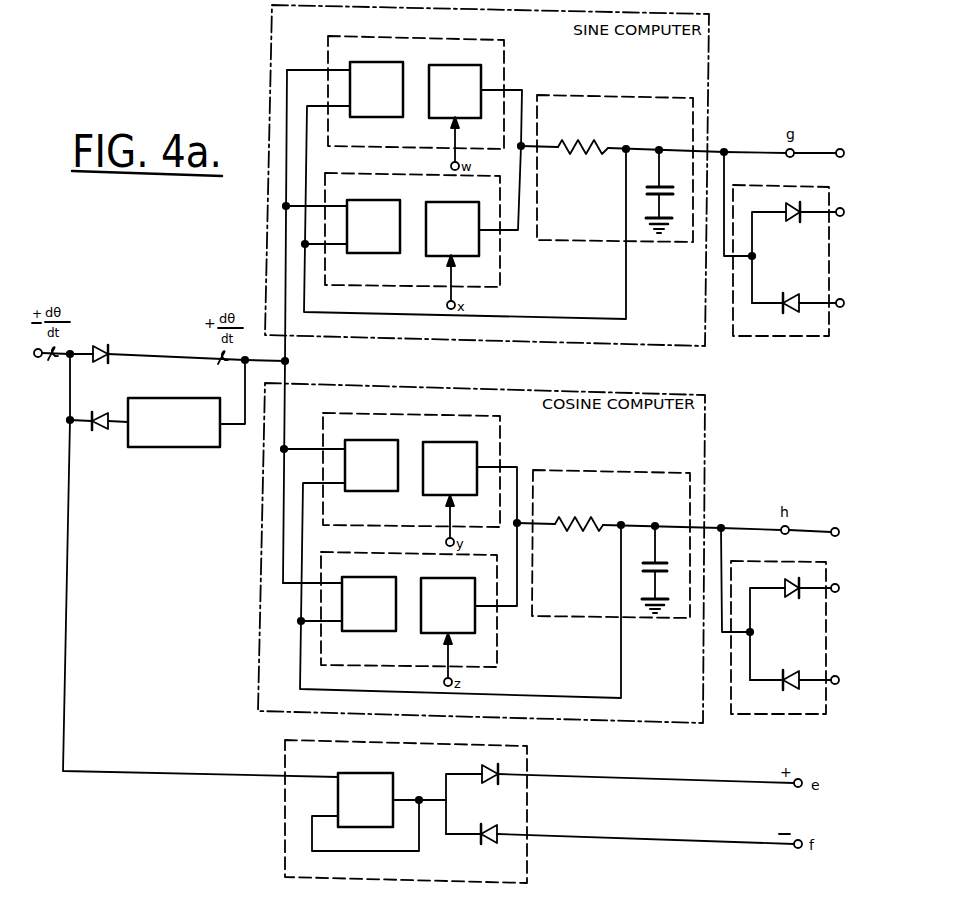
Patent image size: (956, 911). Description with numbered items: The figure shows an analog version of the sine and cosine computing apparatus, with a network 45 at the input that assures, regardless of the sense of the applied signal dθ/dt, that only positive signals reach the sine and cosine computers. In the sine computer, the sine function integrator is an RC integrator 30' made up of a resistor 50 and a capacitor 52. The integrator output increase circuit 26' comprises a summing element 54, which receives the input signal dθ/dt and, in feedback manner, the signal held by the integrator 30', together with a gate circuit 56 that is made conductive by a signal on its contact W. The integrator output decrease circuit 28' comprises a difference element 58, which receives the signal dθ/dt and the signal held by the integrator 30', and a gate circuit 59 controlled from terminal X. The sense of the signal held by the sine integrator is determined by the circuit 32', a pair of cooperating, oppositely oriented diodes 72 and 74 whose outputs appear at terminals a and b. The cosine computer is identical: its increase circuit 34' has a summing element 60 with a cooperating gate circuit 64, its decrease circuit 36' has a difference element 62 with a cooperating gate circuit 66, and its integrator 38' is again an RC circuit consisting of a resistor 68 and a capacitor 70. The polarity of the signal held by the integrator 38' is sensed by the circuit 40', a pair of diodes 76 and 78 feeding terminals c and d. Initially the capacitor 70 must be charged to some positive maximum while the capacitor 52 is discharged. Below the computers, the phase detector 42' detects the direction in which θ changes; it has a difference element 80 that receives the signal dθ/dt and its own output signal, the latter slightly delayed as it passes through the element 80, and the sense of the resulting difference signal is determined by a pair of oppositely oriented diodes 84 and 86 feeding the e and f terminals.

The integrator output increase circuit 26' is at (446, 92).
The integrator output decrease circuit 28' is at (458, 232).
The RC integrator 30' is at (630, 145).
The circuit for sensing integrator polarity 32' is at (791, 265).
The cosine increase circuit 34' is at (446, 470).
The cosine decrease circuit 36' is at (450, 611).
The integrator 38' is at (626, 526).
The circuit for sensing integrator polarity 40' is at (787, 641).
The phase detector 42' is at (444, 811).
The network 45 is at (166, 447).
The resistor 50 is at (586, 154).
The capacitor 52 is at (647, 190).
The summing element 54 is at (358, 117).
The gate circuit 56 is at (460, 118).
The difference element 58 is at (372, 253).
The gate circuit 59 is at (458, 256).
The summing element 60 is at (368, 491).
The difference element 62 is at (366, 631).
The gate circuit 64 is at (456, 495).
The gate circuit 66 is at (452, 633).
The resistor 68 is at (582, 531).
The capacitor 70 is at (643, 565).
The diode 72 is at (787, 221).
The diode 74 is at (792, 293).
The diode 76 is at (787, 597).
The diode 78 is at (790, 670).
The difference element 80 is at (394, 787).
The diode 84 is at (482, 782).
The diode 86 is at (483, 840).